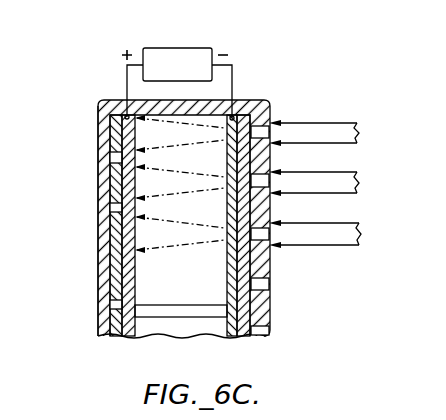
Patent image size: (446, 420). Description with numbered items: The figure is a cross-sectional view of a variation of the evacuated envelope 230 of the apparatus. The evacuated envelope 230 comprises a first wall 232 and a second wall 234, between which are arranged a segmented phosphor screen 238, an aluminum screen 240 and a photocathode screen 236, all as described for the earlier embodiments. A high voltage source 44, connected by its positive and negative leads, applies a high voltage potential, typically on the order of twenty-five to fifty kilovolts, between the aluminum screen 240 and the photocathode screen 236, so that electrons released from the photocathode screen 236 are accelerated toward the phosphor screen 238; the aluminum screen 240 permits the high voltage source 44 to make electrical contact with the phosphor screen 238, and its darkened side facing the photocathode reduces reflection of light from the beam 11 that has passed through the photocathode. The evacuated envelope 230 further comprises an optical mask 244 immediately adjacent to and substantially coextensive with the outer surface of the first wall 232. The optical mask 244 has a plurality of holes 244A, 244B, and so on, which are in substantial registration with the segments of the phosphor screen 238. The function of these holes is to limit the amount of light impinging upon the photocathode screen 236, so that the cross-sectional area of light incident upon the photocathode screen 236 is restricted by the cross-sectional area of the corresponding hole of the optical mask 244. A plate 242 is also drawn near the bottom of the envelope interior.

The beam 11 is at (333, 143).
The high voltage source 44 is at (202, 48).
The evacuated envelope 230 is at (94, 232).
The first wall 232 is at (244, 337).
The second wall 234 is at (100, 318).
The photocathode screen 236 is at (229, 337).
The segmented phosphor screen 238 is at (117, 337).
The aluminum screen 240 is at (128, 337).
The plate 242 is at (163, 307).
The optical mask 244 is at (258, 265).
The hole 244A is at (264, 132).
The hole 244B is at (264, 181).